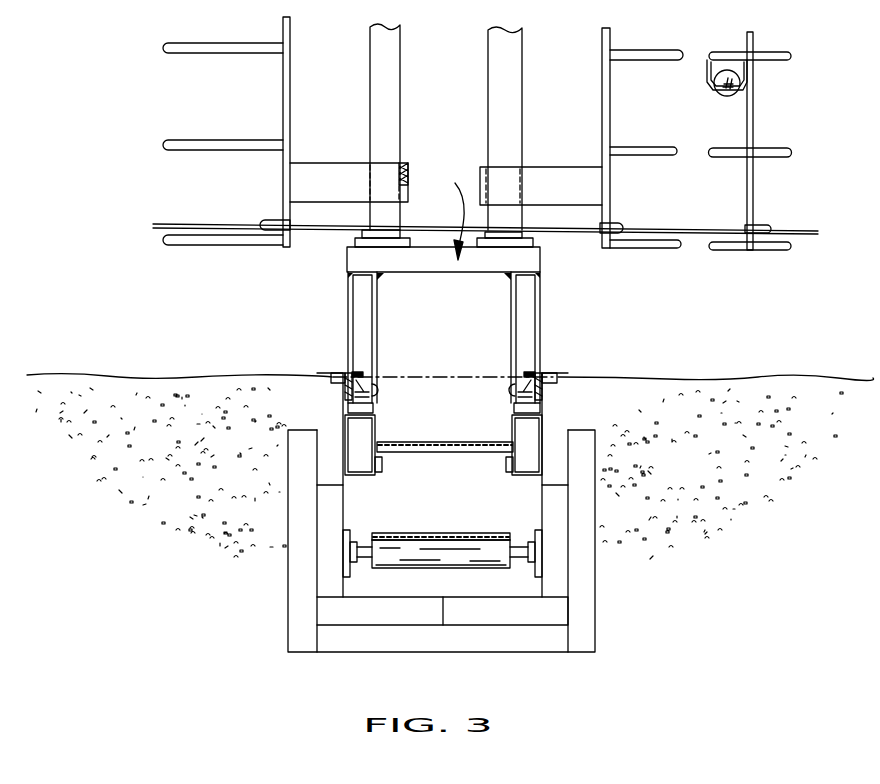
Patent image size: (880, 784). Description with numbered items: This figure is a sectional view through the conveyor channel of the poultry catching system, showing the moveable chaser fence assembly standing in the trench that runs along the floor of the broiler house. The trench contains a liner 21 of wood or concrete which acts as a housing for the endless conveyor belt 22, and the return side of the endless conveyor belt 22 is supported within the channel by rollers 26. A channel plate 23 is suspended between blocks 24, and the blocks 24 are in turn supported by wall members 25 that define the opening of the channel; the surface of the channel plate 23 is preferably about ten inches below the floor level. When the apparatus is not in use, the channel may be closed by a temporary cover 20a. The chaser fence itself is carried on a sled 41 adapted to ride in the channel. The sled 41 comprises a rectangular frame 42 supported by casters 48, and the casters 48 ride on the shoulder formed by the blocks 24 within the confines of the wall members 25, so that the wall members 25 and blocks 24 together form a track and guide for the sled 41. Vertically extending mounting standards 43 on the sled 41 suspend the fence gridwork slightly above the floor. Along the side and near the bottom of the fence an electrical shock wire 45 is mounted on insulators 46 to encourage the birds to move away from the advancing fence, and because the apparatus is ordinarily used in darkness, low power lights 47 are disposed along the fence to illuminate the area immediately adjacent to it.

The temporary cover 20a is at (472, 378).
The liner 21 is at (303, 610).
The endless conveyor belt 22 is at (419, 442).
The channel plate 23 is at (377, 421).
The blocks 24 is at (353, 438).
The wall members 25 is at (333, 393).
The rollers 26 is at (440, 552).
The sled 41 is at (530, 264).
The rectangular frame 42 is at (447, 216).
The mounting standards 43 is at (490, 63).
The electrical shock wire 45 is at (692, 232).
The insulators 46 is at (616, 225).
The low power lights 47 is at (723, 96).
The casters 48 is at (346, 374).